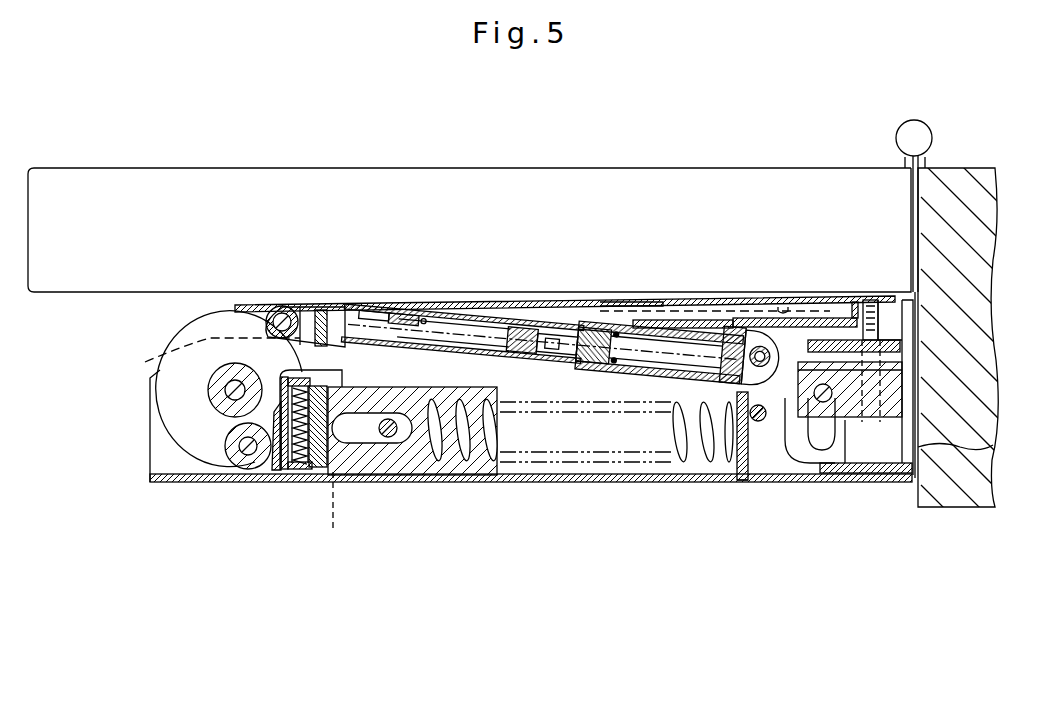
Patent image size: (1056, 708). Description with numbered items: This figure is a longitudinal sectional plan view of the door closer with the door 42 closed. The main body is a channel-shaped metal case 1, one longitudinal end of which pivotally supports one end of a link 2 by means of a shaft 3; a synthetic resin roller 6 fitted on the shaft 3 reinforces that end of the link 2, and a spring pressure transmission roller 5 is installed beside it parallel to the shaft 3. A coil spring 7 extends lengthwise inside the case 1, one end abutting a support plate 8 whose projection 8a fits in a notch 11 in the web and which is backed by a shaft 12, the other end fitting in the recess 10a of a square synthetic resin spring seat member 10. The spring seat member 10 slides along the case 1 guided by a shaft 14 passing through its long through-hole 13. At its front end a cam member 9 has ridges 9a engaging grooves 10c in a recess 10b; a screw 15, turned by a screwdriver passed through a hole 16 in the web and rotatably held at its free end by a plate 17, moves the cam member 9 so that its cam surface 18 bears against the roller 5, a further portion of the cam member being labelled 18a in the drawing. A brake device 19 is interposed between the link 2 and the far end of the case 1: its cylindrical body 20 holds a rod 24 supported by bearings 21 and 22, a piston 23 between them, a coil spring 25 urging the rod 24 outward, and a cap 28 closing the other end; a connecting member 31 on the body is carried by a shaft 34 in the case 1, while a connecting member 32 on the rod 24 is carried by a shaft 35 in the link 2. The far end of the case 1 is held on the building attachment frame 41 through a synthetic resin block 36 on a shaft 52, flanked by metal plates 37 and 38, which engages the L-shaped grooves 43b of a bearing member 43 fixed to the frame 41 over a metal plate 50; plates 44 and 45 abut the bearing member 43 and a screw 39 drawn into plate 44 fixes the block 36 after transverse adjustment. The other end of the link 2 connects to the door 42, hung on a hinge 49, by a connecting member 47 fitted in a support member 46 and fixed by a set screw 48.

The case 1 is at (601, 494).
The link 2 is at (658, 302).
The shaft 3 is at (210, 405).
The roller 5 is at (230, 464).
The roller 6 is at (210, 377).
The coil spring 7 is at (676, 462).
The support plate 8 is at (748, 462).
The projection 8a is at (745, 480).
The cam member 9 is at (322, 470).
The ridges 9a is at (328, 470).
The spring seat member 10 is at (417, 455).
The recess 10a is at (470, 462).
The recess 10b is at (345, 462).
The grooves 10c is at (277, 380).
The notch 11 is at (728, 482).
The shaft 12 is at (766, 462).
The through-hole 13 is at (370, 442).
The shaft 14 is at (393, 437).
The screw 15 is at (298, 468).
The hole 16 is at (317, 470).
The plate 17 is at (295, 310).
The cam surface 18 is at (283, 470).
The retainer foot 18a is at (238, 478).
The brake device 19 is at (590, 336).
The cylindrical body 20 is at (528, 314).
The bearing 21 is at (402, 306).
The bearing 22 is at (617, 333).
The piston 23 is at (555, 327).
The rod 24 is at (477, 330).
The coil spring 25 is at (375, 305).
The cap 28 is at (718, 335).
The connecting member 31 is at (727, 312).
The connecting member 32 is at (305, 305).
The shaft 34 is at (785, 312).
The shaft 35 is at (278, 312).
The block 36 is at (918, 400).
The plate 37 is at (835, 330).
The plate 38 is at (846, 462).
The screw 39 is at (918, 323).
The attachment frame 41 is at (958, 185).
The door 42 is at (509, 188).
The bearing member 43 is at (896, 468).
The grooves 43b is at (808, 462).
The plate 44 is at (870, 312).
The plate 45 is at (868, 470).
The support member 46 is at (862, 302).
The connecting member 47 is at (758, 305).
The set screw 48 is at (784, 302).
The hinge 49 is at (901, 127).
The metal plate 50 is at (990, 444).
The shaft 52 is at (826, 300).